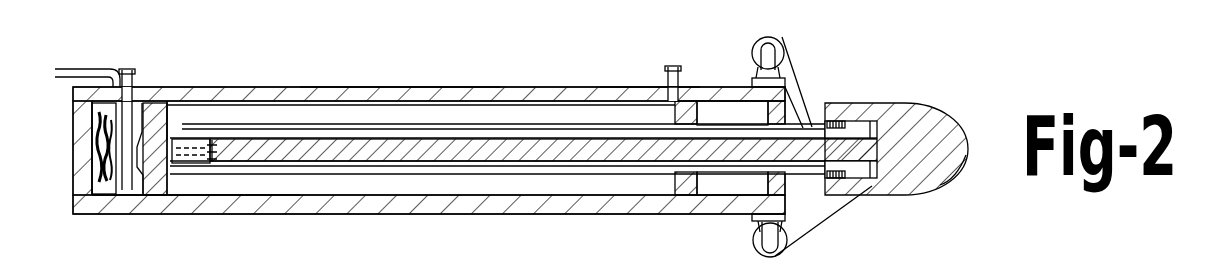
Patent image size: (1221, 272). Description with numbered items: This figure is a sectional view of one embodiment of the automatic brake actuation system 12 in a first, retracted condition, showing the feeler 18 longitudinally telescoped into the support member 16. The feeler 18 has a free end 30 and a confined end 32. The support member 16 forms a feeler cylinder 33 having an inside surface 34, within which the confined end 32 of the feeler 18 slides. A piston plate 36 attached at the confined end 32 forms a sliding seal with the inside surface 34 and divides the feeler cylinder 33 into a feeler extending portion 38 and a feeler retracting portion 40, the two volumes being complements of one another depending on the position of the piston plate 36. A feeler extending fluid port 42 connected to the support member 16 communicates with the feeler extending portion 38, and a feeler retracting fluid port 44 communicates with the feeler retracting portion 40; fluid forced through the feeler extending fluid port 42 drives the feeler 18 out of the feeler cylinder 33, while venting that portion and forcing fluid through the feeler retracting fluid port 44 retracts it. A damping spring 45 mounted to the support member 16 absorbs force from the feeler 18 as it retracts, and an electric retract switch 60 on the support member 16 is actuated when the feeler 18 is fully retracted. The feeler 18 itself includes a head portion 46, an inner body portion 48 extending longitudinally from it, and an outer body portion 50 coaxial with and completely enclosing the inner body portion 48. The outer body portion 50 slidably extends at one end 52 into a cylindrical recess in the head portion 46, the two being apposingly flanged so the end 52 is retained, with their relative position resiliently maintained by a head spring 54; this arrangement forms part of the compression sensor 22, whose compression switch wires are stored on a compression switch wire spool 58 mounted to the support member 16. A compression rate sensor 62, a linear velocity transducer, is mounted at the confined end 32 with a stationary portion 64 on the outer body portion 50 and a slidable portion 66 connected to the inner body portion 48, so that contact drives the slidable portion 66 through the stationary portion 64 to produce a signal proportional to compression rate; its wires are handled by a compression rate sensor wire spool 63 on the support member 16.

The actuator assembly 12 is at (672, 37).
The support member 16 is at (410, 86).
The feeler 18 is at (588, 126).
The compression sensor 22 is at (822, 196).
The free end 30 is at (967, 113).
The confined end 32 is at (238, 110).
The feeler cylinder 33 is at (380, 60).
The inside surface 34 is at (300, 106).
The piston plate 36 is at (215, 120).
The feeler extending portion 38 is at (130, 181).
The feeler retracting portion 40 is at (276, 183).
The feeler extending fluid port 42 is at (138, 72).
The feeler retracting fluid port 44 is at (678, 70).
The damping spring 45 is at (97, 123).
The head portion 46 is at (947, 188).
The inner body portion 48 is at (508, 139).
The outer body portion 50 is at (435, 174).
The end 52 is at (857, 124).
The head spring 54 is at (829, 118).
The compression switch wire spool 58 is at (753, 243).
The electric retract switch 60 is at (178, 119).
The compression rate sensor 62 is at (168, 186).
The compression rate sensor wire spool 63 is at (782, 40).
The stationary portion 64 is at (187, 167).
The slidable portion 66 is at (213, 162).